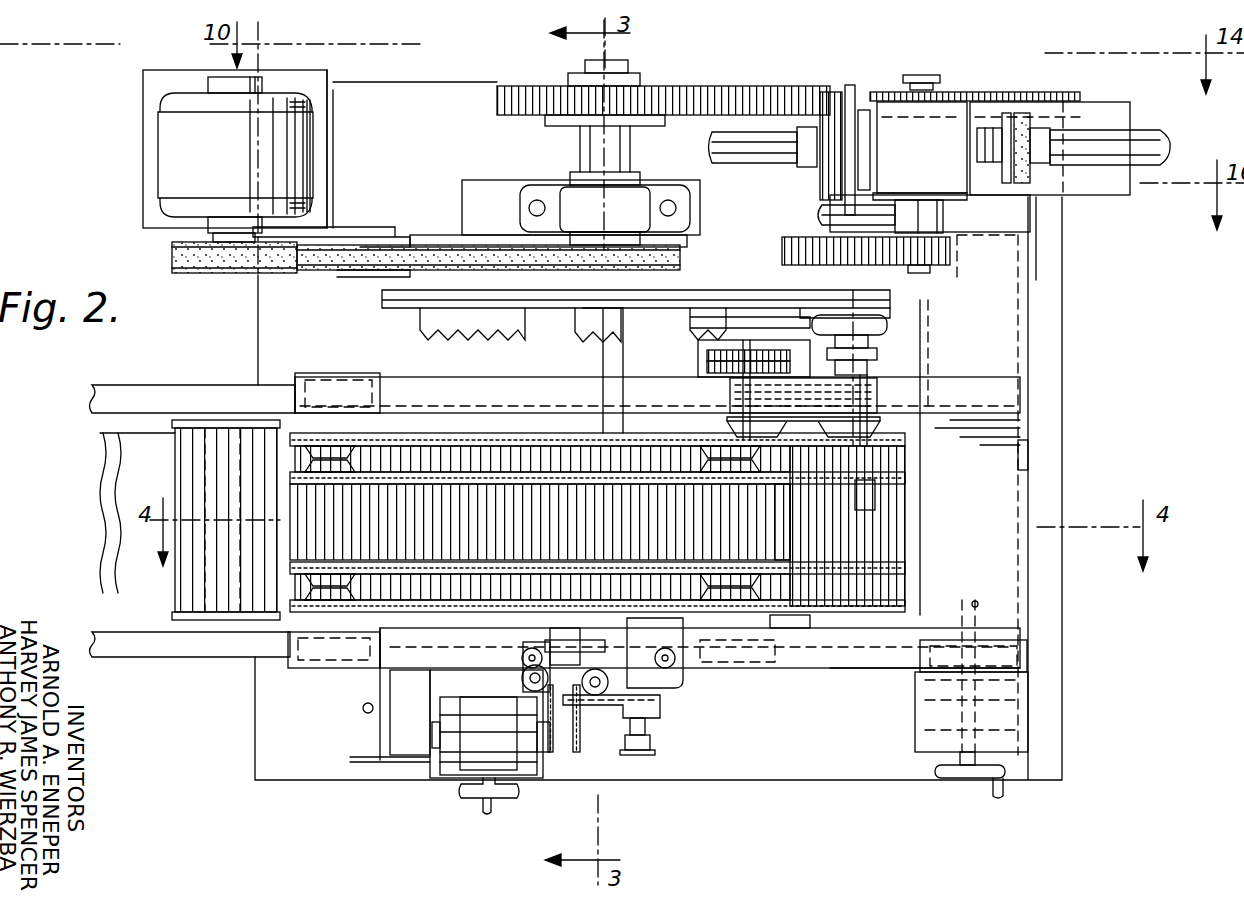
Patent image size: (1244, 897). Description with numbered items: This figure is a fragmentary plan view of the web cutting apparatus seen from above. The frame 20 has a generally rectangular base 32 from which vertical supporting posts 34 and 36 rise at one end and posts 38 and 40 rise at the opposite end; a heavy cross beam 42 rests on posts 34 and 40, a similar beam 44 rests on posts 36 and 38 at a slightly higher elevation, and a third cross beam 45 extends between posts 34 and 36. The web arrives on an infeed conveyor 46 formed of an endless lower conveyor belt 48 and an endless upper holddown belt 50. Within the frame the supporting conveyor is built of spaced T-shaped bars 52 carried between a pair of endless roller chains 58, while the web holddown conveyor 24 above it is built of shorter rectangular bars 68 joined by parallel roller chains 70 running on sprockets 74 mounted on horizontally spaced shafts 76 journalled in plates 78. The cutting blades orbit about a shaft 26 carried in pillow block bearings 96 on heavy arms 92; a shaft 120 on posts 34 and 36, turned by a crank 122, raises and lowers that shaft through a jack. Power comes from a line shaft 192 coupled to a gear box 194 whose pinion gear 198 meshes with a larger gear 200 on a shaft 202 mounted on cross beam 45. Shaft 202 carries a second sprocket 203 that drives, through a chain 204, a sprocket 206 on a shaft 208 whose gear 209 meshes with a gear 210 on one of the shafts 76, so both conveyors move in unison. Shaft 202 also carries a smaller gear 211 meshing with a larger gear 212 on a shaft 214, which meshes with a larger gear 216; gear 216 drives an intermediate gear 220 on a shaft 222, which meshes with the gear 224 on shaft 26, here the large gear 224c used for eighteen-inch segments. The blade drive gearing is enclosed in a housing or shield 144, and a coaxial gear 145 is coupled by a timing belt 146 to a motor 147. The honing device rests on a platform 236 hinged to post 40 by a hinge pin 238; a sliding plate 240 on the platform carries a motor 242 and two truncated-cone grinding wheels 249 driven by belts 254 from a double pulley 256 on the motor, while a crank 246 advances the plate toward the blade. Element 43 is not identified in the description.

The motor 147 is at (172, 143).
The timing belt 146 is at (430, 245).
The gear 145 is at (523, 256).
The shaft 26 is at (604, 60).
The large gear 224c is at (560, 80).
The gear 224 is at (497, 98).
The arms 92 is at (490, 185).
The pillow block bearing 96 is at (560, 193).
The intermediate gear 220 is at (758, 90).
The shaft 222 is at (833, 88).
The smaller gear 211 is at (858, 84).
The shaft 214 is at (922, 74).
The larger gear 212 is at (967, 90).
The larger gear 216 is at (1072, 101).
The line shaft 192 is at (1168, 142).
The shaft 202 is at (852, 178).
The gear box 194 is at (953, 207).
The pinion gear 198 is at (952, 251).
The larger gear 200 is at (782, 242).
The housing or shield 144 is at (386, 303).
The shafts 76 is at (697, 308).
The endless roller chains 58 is at (573, 437).
The endless roller chains 70 is at (515, 470).
The chain 204 is at (740, 396).
The gear 210 is at (700, 358).
The sprocket 206 is at (700, 383).
The second sprocket 203 is at (880, 395).
The shaft 208 is at (885, 345).
The gear 209 is at (885, 366).
The vertical supporting post 36 is at (1028, 372).
The vertical supporting post 38 is at (305, 375).
The cross beam 44 is at (415, 377).
The web holddown conveyor 24 is at (903, 522).
The bars 68 is at (780, 520).
The sprockets 74 is at (880, 460).
The bars 52 is at (830, 580).
The grinding wheels 249 is at (557, 640).
The endless lower conveyor belt 48 is at (270, 577).
The infeed conveyor 46 is at (96, 531).
The endless upper or holddown conveyor belt 50 is at (157, 451).
The frame 20 is at (1034, 432).
The third cross beam 45 is at (1010, 476).
The base 32 is at (1062, 622).
The vertical supporting post 34 is at (1030, 665).
The shaft 120 is at (980, 608).
The crank 122 is at (970, 780).
The vertical supporting post 40 is at (308, 660).
The block 43 is at (531, 650).
The cross beam 42 is at (780, 668).
The plates 78 is at (777, 632).
The platform 236 is at (383, 738).
The hinge pin 238 is at (363, 708).
The plate 240 is at (383, 775).
The motor 242 is at (468, 748).
The crank 246 is at (477, 797).
The double pulley 256 is at (563, 747).
The belt 254 is at (590, 735).